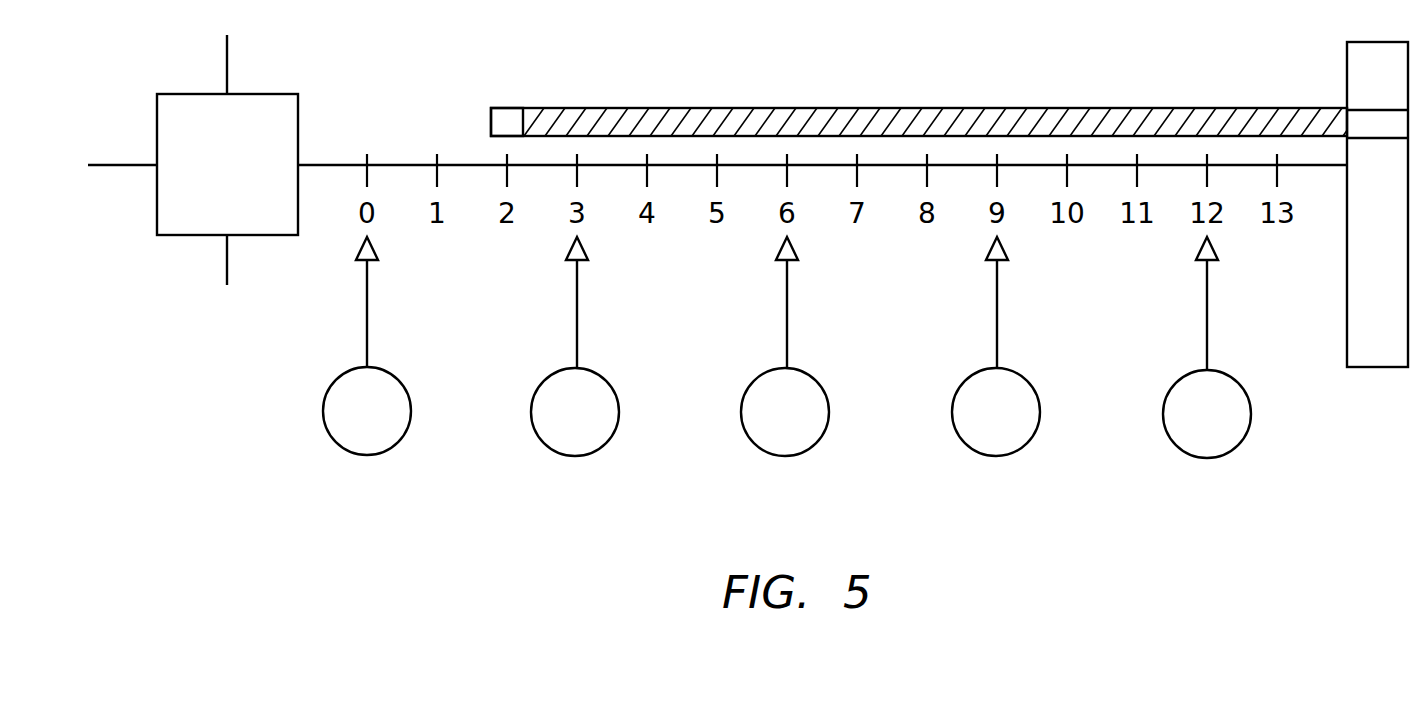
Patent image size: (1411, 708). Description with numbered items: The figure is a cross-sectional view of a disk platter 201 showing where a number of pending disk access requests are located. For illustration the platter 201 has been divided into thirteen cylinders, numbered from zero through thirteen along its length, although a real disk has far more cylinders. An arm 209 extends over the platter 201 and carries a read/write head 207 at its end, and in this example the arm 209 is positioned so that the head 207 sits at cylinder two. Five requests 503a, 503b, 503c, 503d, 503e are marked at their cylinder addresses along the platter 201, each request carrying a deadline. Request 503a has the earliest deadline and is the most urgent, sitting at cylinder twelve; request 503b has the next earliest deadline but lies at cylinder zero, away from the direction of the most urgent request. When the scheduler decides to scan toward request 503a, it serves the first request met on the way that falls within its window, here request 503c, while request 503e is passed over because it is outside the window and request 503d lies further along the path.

The disk platter 201 is at (1320, 172).
The read/write head 207 is at (507, 108).
The arm 209 is at (1100, 108).
The request 503a is at (1242, 440).
The request 503b is at (402, 437).
The request 503c is at (820, 438).
The request 503d is at (1031, 438).
The request 503e is at (610, 438).